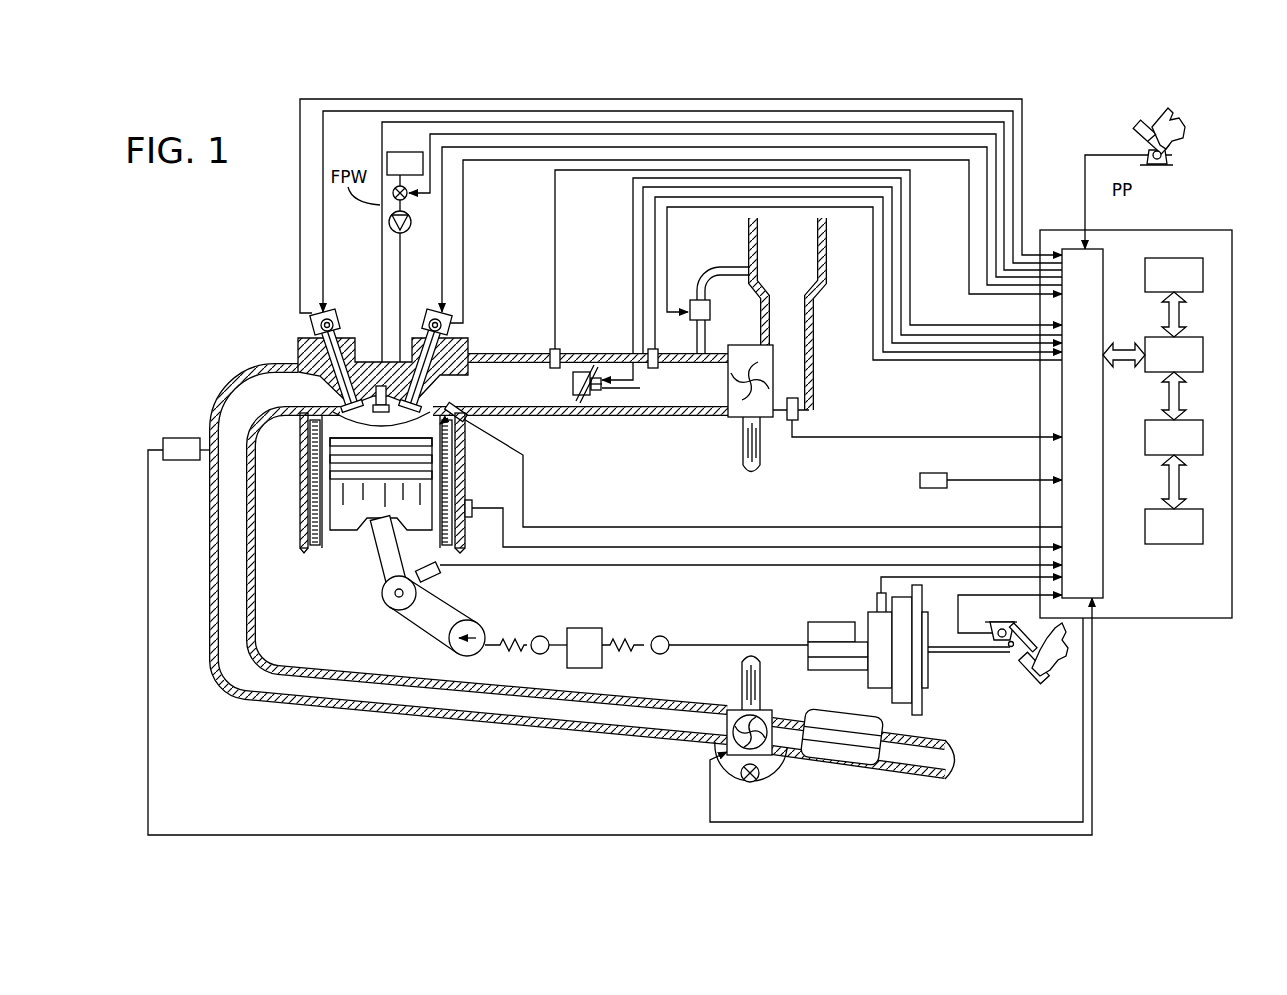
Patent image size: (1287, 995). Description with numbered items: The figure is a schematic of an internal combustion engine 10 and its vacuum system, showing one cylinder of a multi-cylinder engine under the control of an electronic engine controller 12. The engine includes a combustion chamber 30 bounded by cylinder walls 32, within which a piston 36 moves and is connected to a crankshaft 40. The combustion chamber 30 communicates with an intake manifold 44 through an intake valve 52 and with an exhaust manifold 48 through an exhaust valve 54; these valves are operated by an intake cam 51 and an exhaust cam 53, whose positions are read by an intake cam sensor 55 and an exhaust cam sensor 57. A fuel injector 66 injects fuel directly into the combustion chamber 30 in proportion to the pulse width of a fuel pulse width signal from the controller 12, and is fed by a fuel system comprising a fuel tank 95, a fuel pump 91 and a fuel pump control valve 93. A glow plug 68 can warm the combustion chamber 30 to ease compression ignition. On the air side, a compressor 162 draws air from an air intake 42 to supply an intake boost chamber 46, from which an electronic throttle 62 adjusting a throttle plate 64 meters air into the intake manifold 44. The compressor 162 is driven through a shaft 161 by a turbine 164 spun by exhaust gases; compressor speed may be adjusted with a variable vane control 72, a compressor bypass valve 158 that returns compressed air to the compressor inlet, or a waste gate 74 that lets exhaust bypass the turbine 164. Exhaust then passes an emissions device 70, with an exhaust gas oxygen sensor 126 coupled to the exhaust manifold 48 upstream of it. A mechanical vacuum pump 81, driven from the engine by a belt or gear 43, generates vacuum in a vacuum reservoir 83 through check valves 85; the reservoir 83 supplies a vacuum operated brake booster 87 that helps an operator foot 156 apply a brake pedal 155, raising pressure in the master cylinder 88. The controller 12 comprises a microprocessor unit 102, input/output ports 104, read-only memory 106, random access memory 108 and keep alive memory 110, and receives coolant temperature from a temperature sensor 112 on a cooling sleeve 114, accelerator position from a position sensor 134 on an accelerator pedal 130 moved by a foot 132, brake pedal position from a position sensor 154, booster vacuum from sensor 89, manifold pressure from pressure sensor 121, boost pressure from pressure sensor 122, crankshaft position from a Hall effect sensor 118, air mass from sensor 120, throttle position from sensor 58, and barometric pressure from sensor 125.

The internal combustion engine 10 is at (245, 300).
The electronic engine controller 12 is at (1205, 232).
The combustion chamber 30 is at (380, 423).
The cylinder walls 32 is at (333, 537).
The piston 36 is at (370, 505).
The crankshaft 40 is at (390, 608).
The air intake 42 is at (774, 280).
The belt or gear 43 is at (433, 642).
The intake manifold 44 is at (495, 396).
The intake boost chamber 46 is at (652, 396).
The exhaust manifold 48 is at (258, 400).
The intake cam 51 is at (433, 318).
The intake valve 52 is at (418, 402).
The exhaust cam 53 is at (330, 318).
The exhaust valve 54 is at (300, 365).
The intake cam sensor 55 is at (450, 325).
The exhaust cam sensor 57 is at (312, 318).
The throttle position sensor 58 is at (600, 391).
The electronic throttle 62 is at (582, 370).
The throttle plate 64 is at (596, 364).
The fuel injector 66 is at (377, 388).
The glow plug 68 is at (462, 418).
The emissions device 70 is at (842, 766).
The variable vane control 72 is at (725, 712).
The waste gate 74 is at (755, 782).
The mechanical vacuum pump 81 is at (478, 622).
The vacuum reservoir 83 is at (584, 648).
The check valves 85 is at (540, 636).
The vacuum operated brake booster 87 is at (868, 682).
The master cylinder 88 is at (812, 622).
The brake booster vacuum sensor 89 is at (877, 603).
The fuel pump 91 is at (406, 230).
The fuel pump control valve 93 is at (406, 200).
The fuel tank 95 is at (396, 172).
The microprocessor unit 102 is at (1203, 350).
The input/output ports 104 is at (1103, 262).
The read-only memory 106 is at (1203, 272).
The random access memory 108 is at (1203, 434).
The keep alive memory 110 is at (1203, 522).
The temperature sensor 112 is at (472, 503).
The cooling sleeve 114 is at (312, 475).
The Hall effect sensor 118 is at (438, 574).
The air mass sensor 120 is at (799, 418).
The pressure sensor 121 is at (549, 352).
The pressure sensor 122 is at (658, 352).
The barometric pressure sensor 125 is at (938, 488).
The universal exhaust gas oxygen sensor 126 is at (163, 440).
The accelerator pedal 130 is at (1143, 133).
The foot 132 is at (1185, 132).
The position sensor 134 is at (1172, 162).
The position sensor 154 is at (1000, 630).
The brake pedal 155 is at (1013, 676).
The operator foot 156 is at (1045, 680).
The compressor bypass valve 158 is at (695, 300).
The shaft 161 is at (742, 458).
The compressor 162 is at (727, 418).
The turbine 164 is at (735, 710).